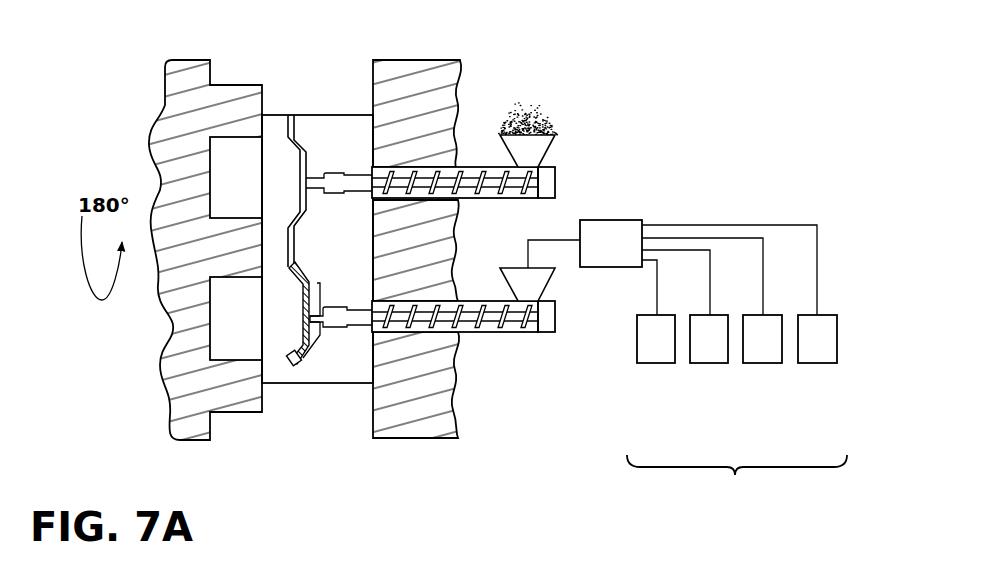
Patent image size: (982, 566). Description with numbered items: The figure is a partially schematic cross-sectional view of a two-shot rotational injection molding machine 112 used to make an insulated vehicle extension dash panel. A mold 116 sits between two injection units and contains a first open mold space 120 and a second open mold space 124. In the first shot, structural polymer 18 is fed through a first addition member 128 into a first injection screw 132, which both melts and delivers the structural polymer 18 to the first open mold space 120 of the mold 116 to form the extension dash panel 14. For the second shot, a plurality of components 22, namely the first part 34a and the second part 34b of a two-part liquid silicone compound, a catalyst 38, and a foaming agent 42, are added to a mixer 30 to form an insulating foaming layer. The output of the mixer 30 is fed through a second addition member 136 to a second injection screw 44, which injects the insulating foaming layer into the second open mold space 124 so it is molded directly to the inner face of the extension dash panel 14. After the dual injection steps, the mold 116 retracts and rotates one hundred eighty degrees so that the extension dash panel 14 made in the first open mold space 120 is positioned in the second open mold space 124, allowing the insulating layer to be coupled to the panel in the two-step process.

The rotary mold assembly 112 is at (143, 114).
The mold 116 is at (278, 146).
The first open mold space 120 is at (298, 143).
The structural polymer 18 is at (528, 115).
The extension dash panel 14 is at (290, 346).
The second open mold space 124 is at (312, 337).
The first addition member 128 is at (537, 150).
The first injection screw 132 is at (490, 190).
The second injection screw 44 is at (490, 318).
The second addition member 136 is at (542, 278).
The mixer 30 is at (615, 235).
The first part of the two-part liquid silicone compound 34a is at (652, 349).
The second part of the two-part liquid silicone compound 34b is at (710, 349).
The catalyst 38 is at (767, 349).
The foaming agent 42 is at (817, 349).
The plurality of components 22 is at (737, 483).